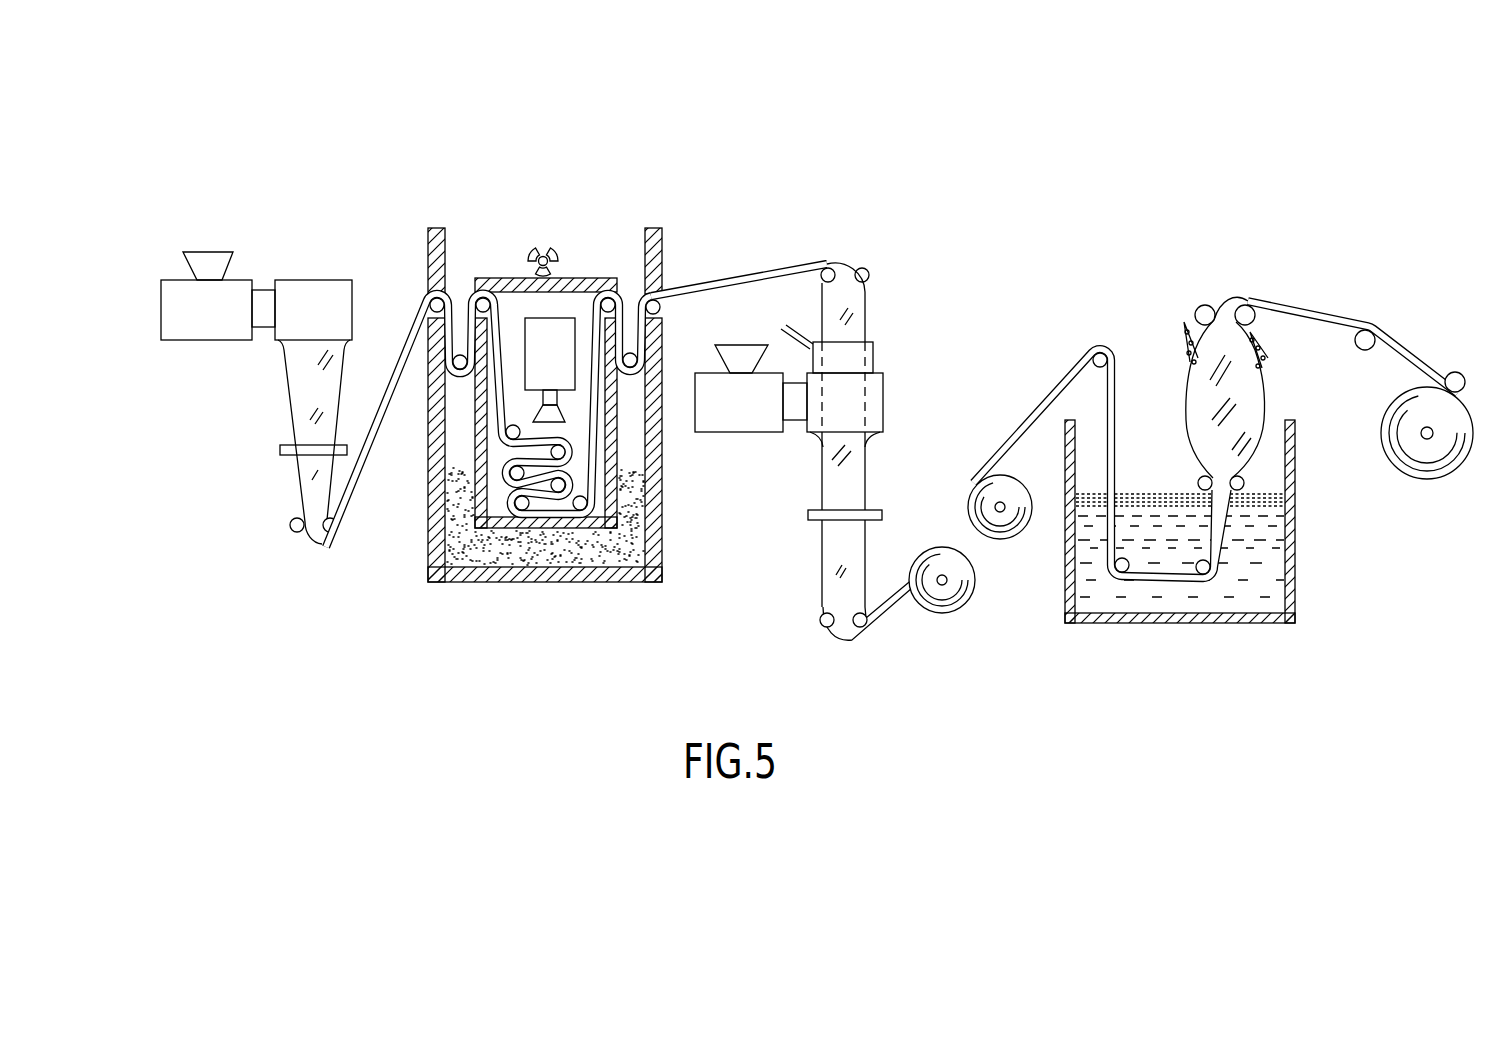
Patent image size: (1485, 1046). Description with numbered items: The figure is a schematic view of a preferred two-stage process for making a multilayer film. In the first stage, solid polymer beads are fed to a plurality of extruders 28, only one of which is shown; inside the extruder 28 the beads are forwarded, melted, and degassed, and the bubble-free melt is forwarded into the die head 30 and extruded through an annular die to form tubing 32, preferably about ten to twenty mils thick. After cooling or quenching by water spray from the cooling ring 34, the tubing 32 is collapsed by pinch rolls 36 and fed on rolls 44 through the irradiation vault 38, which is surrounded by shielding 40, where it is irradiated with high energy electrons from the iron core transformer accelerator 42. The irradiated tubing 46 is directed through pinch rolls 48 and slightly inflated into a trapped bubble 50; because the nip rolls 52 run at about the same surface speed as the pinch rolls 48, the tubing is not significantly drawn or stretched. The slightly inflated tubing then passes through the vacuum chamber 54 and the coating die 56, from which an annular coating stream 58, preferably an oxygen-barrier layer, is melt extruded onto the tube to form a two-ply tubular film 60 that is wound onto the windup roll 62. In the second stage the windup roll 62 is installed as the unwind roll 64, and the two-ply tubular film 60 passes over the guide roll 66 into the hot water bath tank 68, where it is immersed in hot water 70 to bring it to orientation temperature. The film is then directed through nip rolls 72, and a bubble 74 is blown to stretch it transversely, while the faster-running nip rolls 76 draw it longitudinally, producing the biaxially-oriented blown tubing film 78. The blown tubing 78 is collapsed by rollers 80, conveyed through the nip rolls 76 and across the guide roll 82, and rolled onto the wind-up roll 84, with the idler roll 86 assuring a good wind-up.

The extruder 28 is at (238, 287).
The die head 30 is at (313, 297).
The tubing 32 is at (287, 370).
The cooling ring 34 is at (280, 447).
The pinch rolls 36 is at (280, 522).
The irradiation vault 38 is at (618, 458).
The shielding 40 is at (516, 583).
The iron core transformer accelerator 42 is at (535, 318).
The rolls 44 is at (515, 503).
The irradiated tubing 46 is at (770, 270).
The pinch rolls 48 is at (868, 266).
The trapped bubble 50 is at (868, 320).
The nip rolls 52 is at (815, 613).
The vacuum chamber 54 is at (876, 355).
The coating die 56 is at (884, 405).
The annular coating stream 58 is at (823, 445).
The two-ply tubular film 60 is at (868, 490).
The windup roll 62 is at (937, 614).
The unwind roll 64 is at (1010, 535).
The guide roll 66 is at (1090, 350).
The hot water bath tank 68 is at (1297, 575).
The hot water 70 is at (1270, 532).
The nip rolls 72 is at (1200, 480).
The bubble 74 is at (1250, 383).
The nip rolls 76 is at (1203, 304).
The blown tubing film 78 is at (1330, 307).
The rollers 80 is at (1190, 345).
The guide roll 82 is at (1372, 335).
The wind-up roll 84 is at (1435, 480).
The idler roll 86 is at (1460, 374).